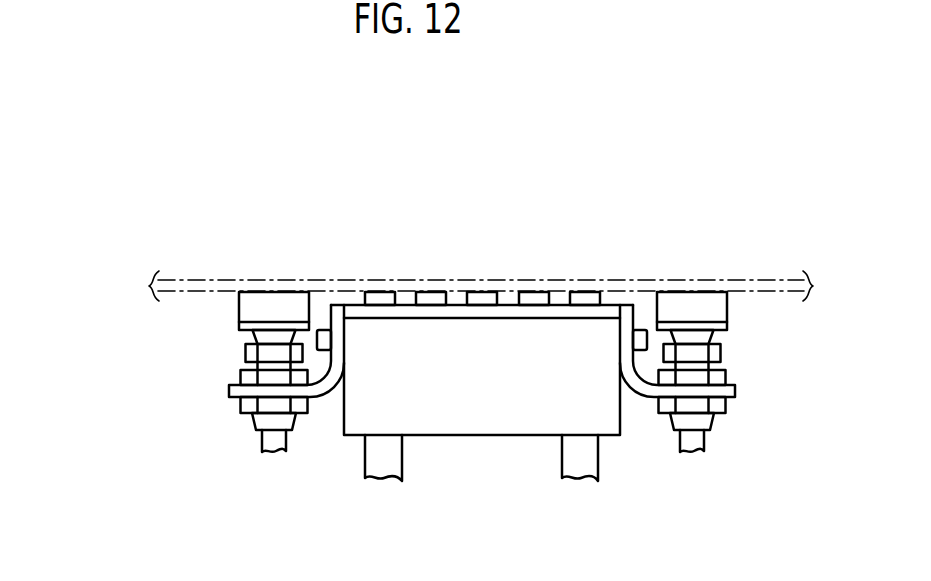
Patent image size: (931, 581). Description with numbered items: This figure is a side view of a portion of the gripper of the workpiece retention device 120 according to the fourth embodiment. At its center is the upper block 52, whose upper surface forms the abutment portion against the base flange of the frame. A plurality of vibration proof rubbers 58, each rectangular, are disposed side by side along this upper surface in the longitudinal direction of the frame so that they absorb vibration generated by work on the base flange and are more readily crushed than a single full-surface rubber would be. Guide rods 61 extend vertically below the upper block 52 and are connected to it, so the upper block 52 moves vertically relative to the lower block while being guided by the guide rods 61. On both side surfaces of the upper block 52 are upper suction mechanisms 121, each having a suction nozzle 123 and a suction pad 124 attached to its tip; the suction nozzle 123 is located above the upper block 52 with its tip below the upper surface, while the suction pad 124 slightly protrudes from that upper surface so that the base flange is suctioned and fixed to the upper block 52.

The upper block 52 is at (525, 437).
The vibration proof rubber 58 is at (413, 300).
The guide rod 61 is at (402, 462).
The workpiece retention device 120 is at (700, 228).
The upper suction mechanism 121 is at (185, 393).
The suction nozzle 123 is at (246, 355).
The suction pad 124 is at (238, 307).